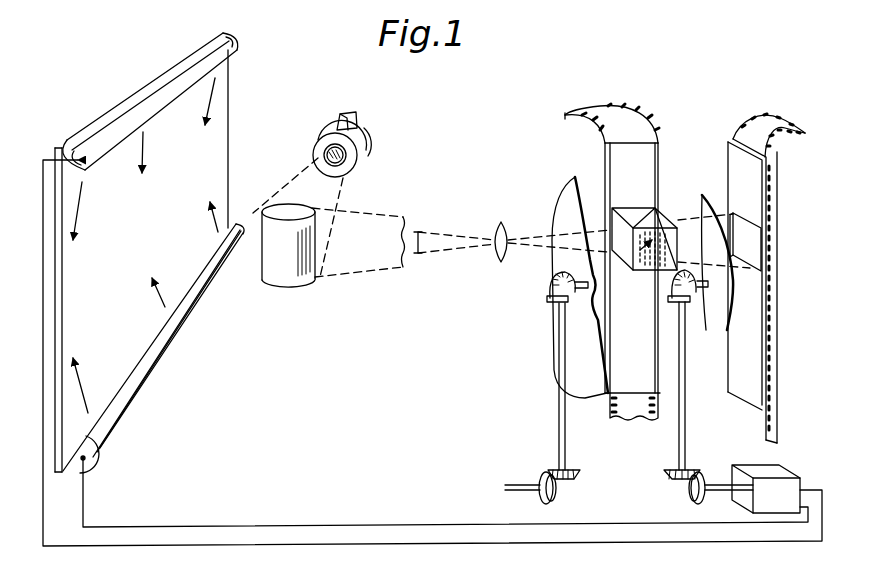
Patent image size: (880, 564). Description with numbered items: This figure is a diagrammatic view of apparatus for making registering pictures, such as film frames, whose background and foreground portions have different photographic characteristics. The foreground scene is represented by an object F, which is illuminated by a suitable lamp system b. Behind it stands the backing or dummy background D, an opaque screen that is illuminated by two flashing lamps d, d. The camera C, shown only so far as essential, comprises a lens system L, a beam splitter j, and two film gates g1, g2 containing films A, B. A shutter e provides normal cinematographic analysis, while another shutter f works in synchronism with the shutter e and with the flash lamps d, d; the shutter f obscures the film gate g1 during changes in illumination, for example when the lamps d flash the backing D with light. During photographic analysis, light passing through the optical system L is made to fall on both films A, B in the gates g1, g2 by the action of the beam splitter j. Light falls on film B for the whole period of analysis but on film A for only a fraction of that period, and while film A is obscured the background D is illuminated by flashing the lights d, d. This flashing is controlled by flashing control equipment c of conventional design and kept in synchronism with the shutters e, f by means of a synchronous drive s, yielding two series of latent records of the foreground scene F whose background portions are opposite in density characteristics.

The backing D is at (213, 143).
The flashing lamps d is at (232, 48).
The lamp system b is at (368, 138).
The foreground scene object F is at (288, 272).
The camera C is at (527, 310).
The lens system L is at (499, 221).
The film B is at (618, 108).
The film A is at (767, 127).
The film gate g2 is at (643, 212).
The beam splitter j is at (648, 268).
The film gate g1 is at (745, 238).
The shutter e is at (595, 365).
The shutter f is at (727, 302).
The synchronous drive s is at (676, 483).
The flashing control equipment c is at (432, 353).